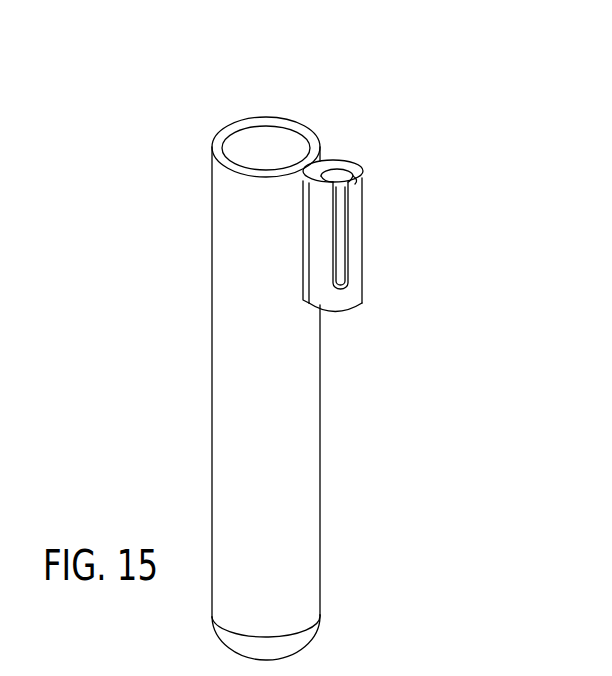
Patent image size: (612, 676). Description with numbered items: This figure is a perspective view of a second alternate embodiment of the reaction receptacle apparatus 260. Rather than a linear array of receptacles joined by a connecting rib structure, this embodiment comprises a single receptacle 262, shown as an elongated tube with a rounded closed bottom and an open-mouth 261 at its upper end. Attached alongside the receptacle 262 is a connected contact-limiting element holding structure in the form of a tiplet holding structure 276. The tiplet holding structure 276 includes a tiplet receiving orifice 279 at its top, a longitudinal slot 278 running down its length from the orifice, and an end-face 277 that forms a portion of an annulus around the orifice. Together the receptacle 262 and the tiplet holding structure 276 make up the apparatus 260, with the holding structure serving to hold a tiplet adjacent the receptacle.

The reaction receptacle apparatus 260 is at (402, 108).
The open-mouth 261 is at (280, 137).
The single receptacle 262 is at (293, 558).
The tiplet holding structure 276 is at (358, 160).
The end-face 277 is at (362, 175).
The longitudinal slot 278 is at (337, 233).
The tiplet receiving orifice 279 is at (338, 170).